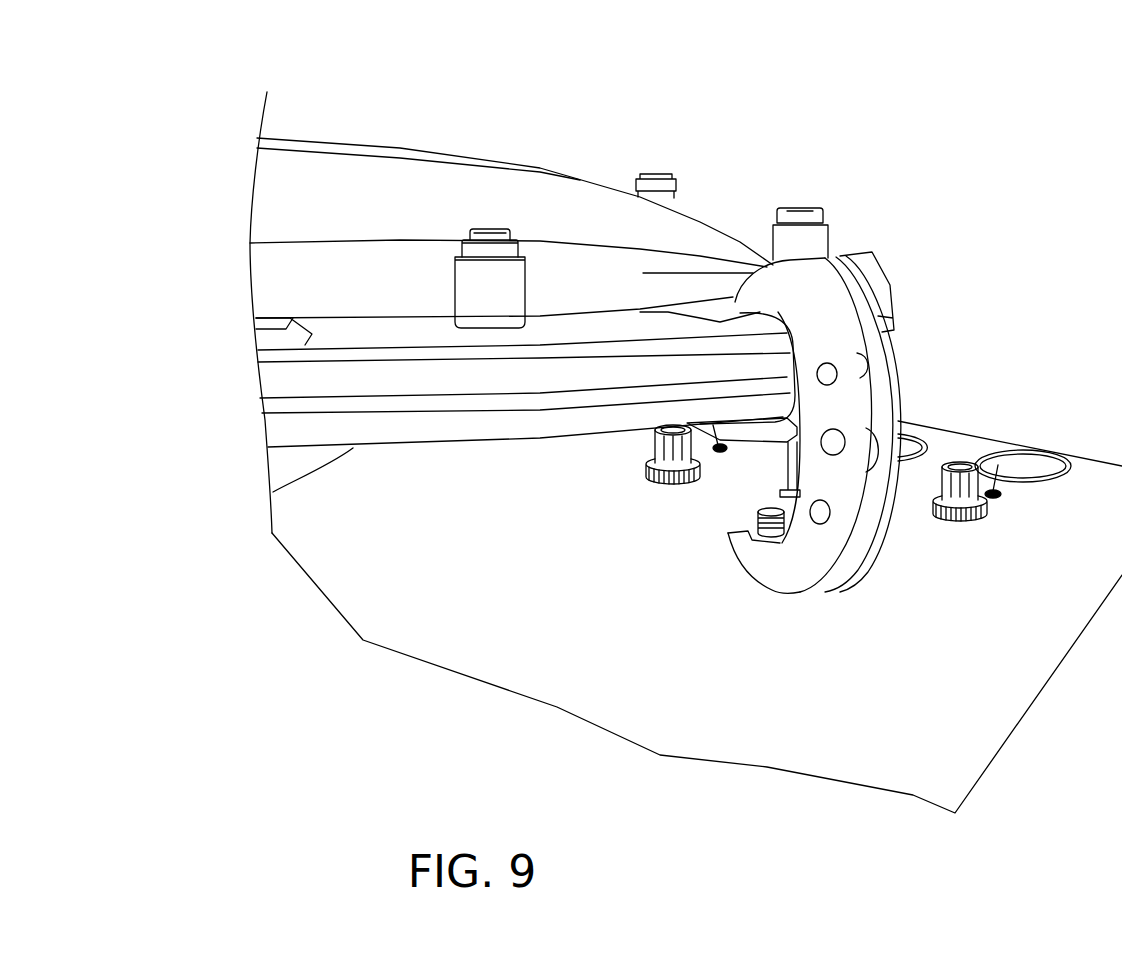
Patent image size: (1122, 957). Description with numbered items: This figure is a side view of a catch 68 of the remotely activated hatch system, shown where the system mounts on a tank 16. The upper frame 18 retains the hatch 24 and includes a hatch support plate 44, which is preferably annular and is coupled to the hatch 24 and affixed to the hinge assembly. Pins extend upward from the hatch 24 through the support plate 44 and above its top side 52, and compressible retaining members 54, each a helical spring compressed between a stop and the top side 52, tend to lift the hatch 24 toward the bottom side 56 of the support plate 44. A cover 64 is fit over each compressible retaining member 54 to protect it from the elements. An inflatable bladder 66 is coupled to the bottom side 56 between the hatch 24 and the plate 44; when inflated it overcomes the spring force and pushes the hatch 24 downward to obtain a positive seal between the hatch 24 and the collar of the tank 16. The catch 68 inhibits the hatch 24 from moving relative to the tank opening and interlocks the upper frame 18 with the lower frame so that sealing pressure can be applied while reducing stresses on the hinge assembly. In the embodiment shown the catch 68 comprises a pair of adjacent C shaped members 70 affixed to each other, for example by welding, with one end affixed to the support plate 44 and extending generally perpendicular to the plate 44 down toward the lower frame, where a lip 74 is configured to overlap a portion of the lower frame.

The tank 16 is at (465, 628).
The upper frame 18 is at (809, 145).
The hatch 24 is at (440, 427).
The hatch support plate 44 is at (613, 330).
The top side 52 is at (427, 340).
The compressible retaining member 54 is at (823, 210).
The bottom side 56 is at (563, 357).
The cover 64 is at (458, 290).
The inflatable bladder 66 is at (337, 383).
The catch 68 is at (878, 370).
The C shaped member 70 is at (772, 570).
The lip 74 is at (728, 533).